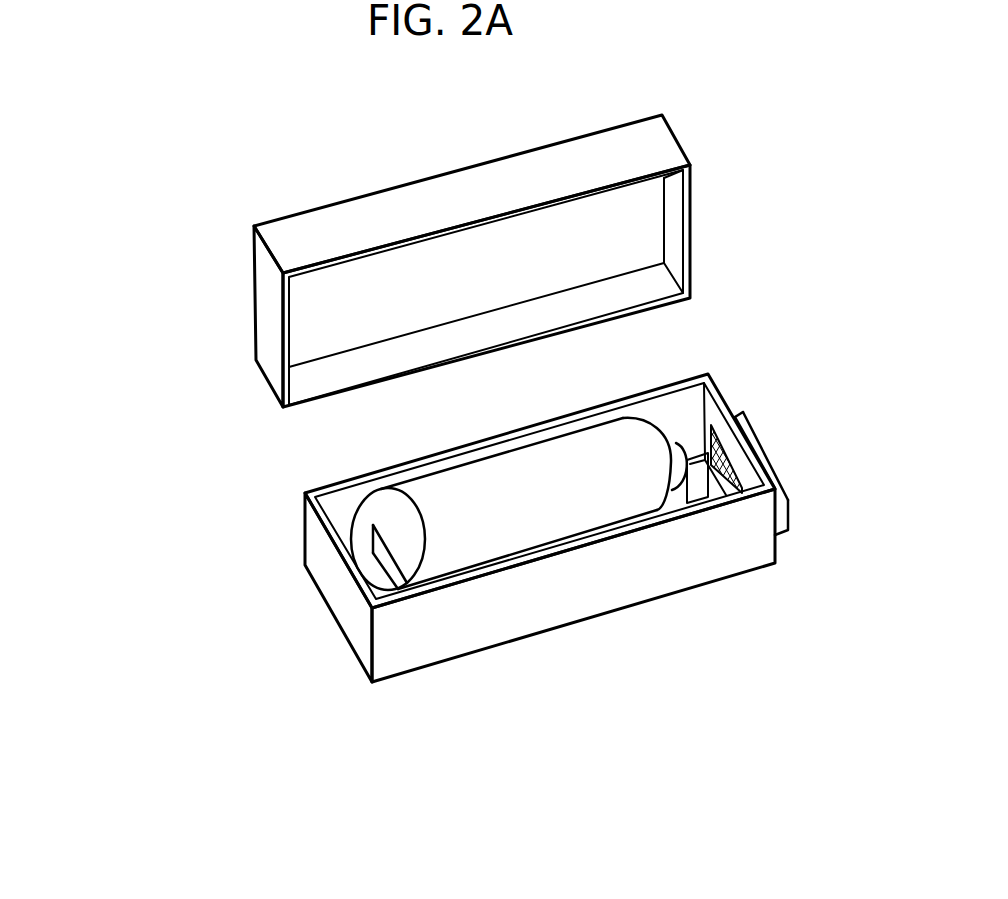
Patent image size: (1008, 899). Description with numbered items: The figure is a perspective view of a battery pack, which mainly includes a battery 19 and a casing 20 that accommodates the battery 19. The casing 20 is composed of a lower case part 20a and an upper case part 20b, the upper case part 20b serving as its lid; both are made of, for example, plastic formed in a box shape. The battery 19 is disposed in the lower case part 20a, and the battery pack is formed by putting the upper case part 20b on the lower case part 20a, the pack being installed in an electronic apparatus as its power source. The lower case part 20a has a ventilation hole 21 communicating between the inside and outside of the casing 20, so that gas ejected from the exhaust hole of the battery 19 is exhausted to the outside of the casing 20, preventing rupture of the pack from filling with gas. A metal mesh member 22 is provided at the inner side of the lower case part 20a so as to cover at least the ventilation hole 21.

The casing 20 is at (117, 462).
The lower case part 20a is at (323, 565).
The upper case part 20b is at (265, 378).
The battery 19 is at (522, 520).
The ventilation hole 21 is at (775, 462).
The metal mesh member 22 is at (715, 435).